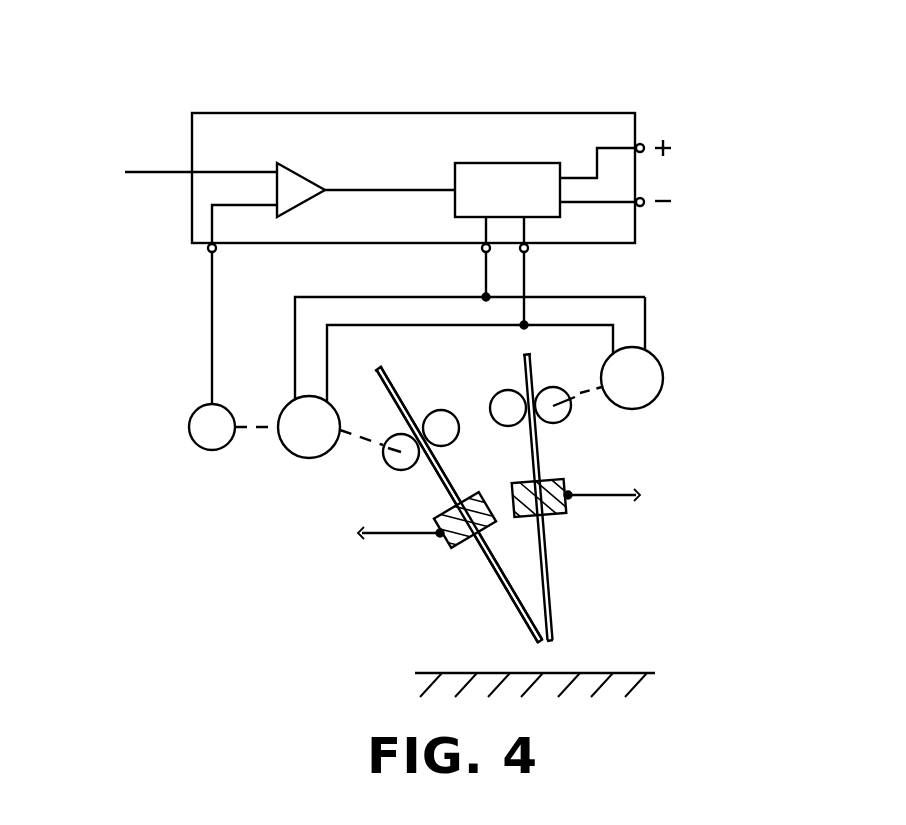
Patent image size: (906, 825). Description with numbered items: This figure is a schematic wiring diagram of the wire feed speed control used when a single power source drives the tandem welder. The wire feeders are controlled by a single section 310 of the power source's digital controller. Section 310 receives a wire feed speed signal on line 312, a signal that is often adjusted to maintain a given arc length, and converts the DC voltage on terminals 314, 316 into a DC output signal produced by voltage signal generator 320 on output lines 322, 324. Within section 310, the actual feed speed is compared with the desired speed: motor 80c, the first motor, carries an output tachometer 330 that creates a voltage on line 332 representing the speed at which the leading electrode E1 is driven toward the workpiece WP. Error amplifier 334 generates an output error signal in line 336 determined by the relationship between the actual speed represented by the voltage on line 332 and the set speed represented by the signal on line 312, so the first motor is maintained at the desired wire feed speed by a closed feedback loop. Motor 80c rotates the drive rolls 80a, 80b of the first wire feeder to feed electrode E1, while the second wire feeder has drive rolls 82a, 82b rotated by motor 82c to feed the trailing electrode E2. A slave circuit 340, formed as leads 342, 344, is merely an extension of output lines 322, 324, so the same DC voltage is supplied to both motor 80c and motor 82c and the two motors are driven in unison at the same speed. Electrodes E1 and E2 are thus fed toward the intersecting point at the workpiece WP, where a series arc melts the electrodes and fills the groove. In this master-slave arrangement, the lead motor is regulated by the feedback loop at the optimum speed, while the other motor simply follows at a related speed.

The controller section 310 is at (425, 107).
The wire feed speed signal line 312 is at (148, 166).
The DC voltage terminal 314 is at (646, 142).
The DC voltage terminal 316 is at (645, 198).
The voltage signal generator 320 is at (505, 162).
The output line 322 is at (487, 268).
The output line 324 is at (530, 268).
The tachometer 330 is at (200, 448).
The tachometer voltage line 332 is at (212, 348).
The error amplifier 334 is at (299, 172).
The error signal line 336 is at (407, 192).
The slave circuit 340 is at (627, 288).
The slave circuit lead 342 is at (617, 335).
The slave circuit lead 344 is at (646, 305).
The drive roll 80a is at (393, 470).
The drive roll 80b is at (435, 410).
The motor 80c is at (292, 452).
The drive roll 82a is at (565, 418).
The drive roll 82b is at (503, 391).
The motor 82c is at (663, 390).
The first electrode E1 is at (515, 602).
The second electrode E2 is at (548, 585).
The workpiece WP is at (630, 668).